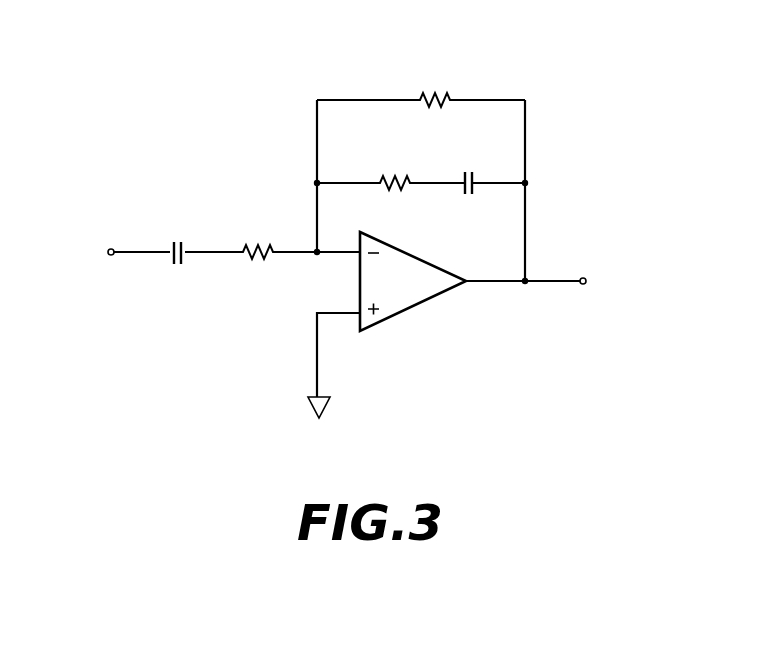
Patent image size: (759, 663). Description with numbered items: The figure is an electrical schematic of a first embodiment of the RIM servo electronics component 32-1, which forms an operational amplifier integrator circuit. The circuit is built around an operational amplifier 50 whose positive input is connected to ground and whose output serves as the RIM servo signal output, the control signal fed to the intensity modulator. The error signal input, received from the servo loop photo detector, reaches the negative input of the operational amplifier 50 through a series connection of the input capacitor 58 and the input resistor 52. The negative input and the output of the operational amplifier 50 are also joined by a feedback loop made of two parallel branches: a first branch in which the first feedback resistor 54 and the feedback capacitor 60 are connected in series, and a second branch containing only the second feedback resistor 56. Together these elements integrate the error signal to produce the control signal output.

The RIM servo electronics component 32-1 is at (611, 89).
The operational amplifier 50 is at (412, 308).
The input resistor 52 is at (262, 244).
The first feedback resistor 54 is at (384, 177).
The second feedback resistor 56 is at (422, 95).
The input capacitor 58 is at (179, 238).
The feedback capacitor 60 is at (469, 170).